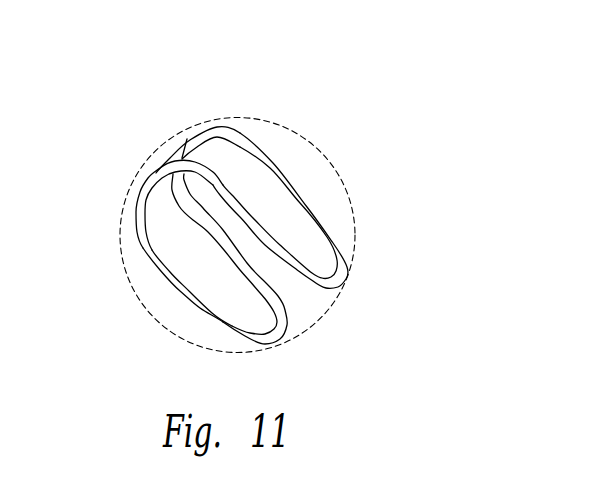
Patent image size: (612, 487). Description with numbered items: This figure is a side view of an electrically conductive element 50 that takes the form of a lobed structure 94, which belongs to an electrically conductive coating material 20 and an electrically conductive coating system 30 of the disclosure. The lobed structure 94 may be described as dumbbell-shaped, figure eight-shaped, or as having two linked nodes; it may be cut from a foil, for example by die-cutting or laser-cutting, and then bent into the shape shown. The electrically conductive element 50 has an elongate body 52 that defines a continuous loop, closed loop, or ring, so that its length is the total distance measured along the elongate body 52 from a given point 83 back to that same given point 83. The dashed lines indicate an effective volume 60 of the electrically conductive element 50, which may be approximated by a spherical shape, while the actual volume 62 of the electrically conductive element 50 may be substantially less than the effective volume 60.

The electrically conductive coating material 20 is at (101, 65).
The electrically conductive coating system 30 is at (93, 110).
The electrically conductive element 50 is at (96, 156).
The elongate body 52 is at (147, 244).
The effective volume 60 is at (320, 138).
The actual volume 62 is at (307, 191).
The given point 83 is at (171, 298).
The lobed structure 94 is at (400, 96).